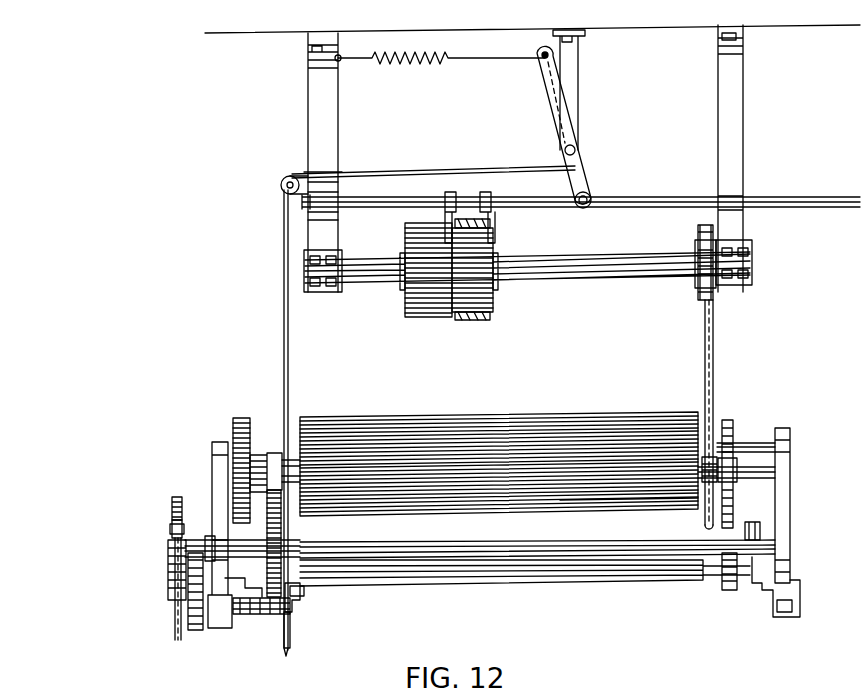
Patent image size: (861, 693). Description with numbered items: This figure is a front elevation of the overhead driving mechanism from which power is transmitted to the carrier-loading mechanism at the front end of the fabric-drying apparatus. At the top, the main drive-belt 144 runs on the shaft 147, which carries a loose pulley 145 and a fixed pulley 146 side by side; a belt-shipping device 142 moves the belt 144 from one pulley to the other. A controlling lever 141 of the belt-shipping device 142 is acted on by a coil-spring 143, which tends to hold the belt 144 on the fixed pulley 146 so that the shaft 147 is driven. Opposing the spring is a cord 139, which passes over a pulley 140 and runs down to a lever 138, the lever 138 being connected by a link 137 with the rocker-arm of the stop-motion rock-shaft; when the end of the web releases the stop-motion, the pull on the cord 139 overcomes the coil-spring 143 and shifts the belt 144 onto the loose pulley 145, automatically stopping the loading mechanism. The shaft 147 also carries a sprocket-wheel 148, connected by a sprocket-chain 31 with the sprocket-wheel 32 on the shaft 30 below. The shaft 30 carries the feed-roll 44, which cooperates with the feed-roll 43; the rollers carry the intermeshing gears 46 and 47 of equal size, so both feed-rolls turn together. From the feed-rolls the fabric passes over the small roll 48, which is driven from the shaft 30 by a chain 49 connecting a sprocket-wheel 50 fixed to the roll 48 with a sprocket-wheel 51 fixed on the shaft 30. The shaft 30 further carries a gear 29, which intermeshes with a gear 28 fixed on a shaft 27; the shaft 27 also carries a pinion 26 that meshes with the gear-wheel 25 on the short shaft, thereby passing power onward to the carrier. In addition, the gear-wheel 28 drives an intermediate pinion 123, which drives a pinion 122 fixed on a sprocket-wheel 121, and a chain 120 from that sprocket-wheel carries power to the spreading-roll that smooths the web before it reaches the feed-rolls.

The gear-wheel 25 is at (195, 633).
The pinion 26 is at (170, 568).
The shaft 27 is at (200, 539).
The gear 28 is at (283, 522).
The gear 29 is at (272, 452).
The shaft 30 is at (296, 458).
The chain 31 is at (713, 369).
The sprocket-wheel 32 is at (719, 428).
The feed-roll 43 is at (546, 414).
The feed-roll 44 is at (594, 504).
The gear 46 is at (232, 434).
The gear 47 is at (171, 495).
The small roll 48 is at (556, 586).
The chain 49 is at (746, 449).
The sprocket-wheel 50 is at (724, 582).
The sprocket-wheel 51 is at (736, 428).
The chain 120 is at (176, 610).
The sprocket-wheel 121 is at (171, 522).
The pinion 122 is at (286, 551).
The intermediate pinion 123 is at (302, 592).
The link 137 is at (292, 640).
The lever 138 is at (298, 606).
The cord 139 is at (390, 176).
The pulley 140 is at (281, 185).
The controlling lever 141 is at (545, 98).
The belt-shipping device 142 is at (486, 200).
The coil-spring 143 is at (400, 62).
The main drive-belt 144 is at (510, 207).
The loose pulley 145 is at (414, 306).
The fixed pulley 146 is at (495, 294).
The shaft 147 is at (368, 285).
The sprocket-wheel 148 is at (697, 234).